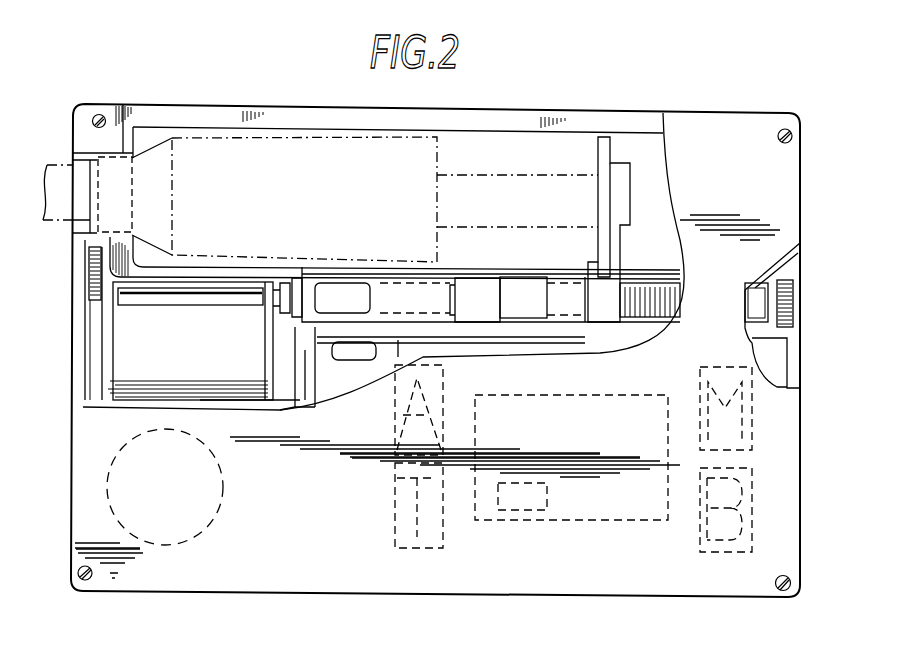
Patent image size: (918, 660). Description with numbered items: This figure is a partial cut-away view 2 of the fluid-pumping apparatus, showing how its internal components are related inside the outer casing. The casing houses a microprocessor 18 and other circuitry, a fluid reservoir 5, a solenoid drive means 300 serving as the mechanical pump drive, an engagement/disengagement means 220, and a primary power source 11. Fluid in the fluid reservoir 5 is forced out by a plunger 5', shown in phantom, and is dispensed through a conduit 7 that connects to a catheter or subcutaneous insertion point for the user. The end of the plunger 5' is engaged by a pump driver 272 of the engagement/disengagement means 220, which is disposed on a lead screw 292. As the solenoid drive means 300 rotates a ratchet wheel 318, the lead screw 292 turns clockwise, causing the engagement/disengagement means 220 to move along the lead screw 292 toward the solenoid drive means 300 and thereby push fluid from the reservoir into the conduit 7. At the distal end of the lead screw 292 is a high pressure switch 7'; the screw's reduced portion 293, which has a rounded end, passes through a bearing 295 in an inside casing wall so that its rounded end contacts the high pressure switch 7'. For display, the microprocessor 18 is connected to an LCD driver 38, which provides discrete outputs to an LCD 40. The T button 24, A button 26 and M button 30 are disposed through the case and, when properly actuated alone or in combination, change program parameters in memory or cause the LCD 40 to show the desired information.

The partial cut-away view of the apparatus 2 is at (696, 102).
The fluid reservoir 5 is at (284, 168).
The plunger 5' is at (517, 201).
The conduit 7 is at (87, 169).
The high pressure switch 7' is at (790, 316).
The primary power source 11 is at (207, 527).
The microprocessor 18 is at (518, 510).
The T button 24 is at (392, 512).
The A button 26 is at (393, 400).
The M button 30 is at (700, 380).
The LCD driver 38 is at (700, 546).
The LCD 40 is at (595, 520).
The engagement/disengagement means 220 is at (527, 318).
The pump driver 272 is at (620, 247).
The lead screw 292 is at (432, 311).
The reduced portion 293 is at (777, 330).
The bearing 295 is at (800, 243).
The solenoid drive means 300 is at (192, 378).
The ratchet wheel 318 is at (87, 252).